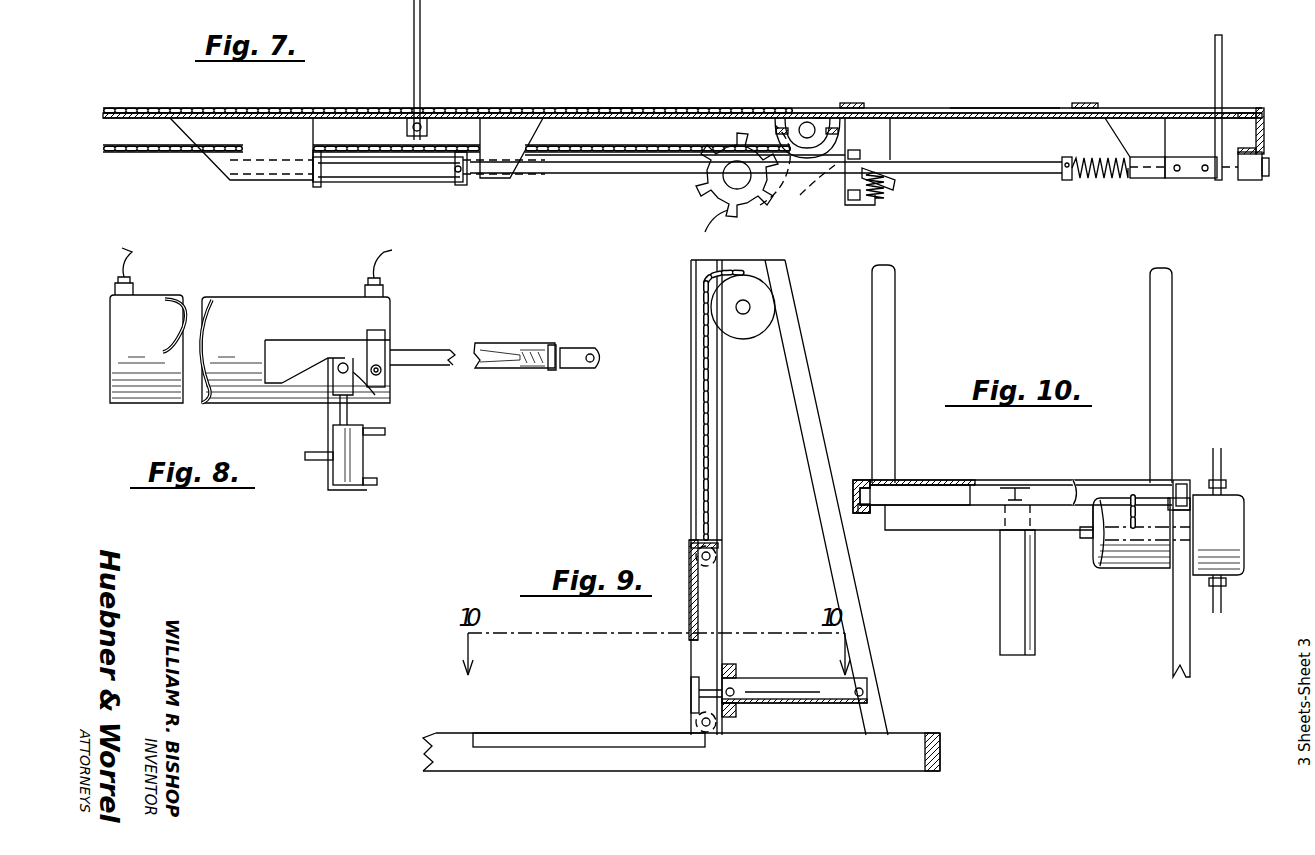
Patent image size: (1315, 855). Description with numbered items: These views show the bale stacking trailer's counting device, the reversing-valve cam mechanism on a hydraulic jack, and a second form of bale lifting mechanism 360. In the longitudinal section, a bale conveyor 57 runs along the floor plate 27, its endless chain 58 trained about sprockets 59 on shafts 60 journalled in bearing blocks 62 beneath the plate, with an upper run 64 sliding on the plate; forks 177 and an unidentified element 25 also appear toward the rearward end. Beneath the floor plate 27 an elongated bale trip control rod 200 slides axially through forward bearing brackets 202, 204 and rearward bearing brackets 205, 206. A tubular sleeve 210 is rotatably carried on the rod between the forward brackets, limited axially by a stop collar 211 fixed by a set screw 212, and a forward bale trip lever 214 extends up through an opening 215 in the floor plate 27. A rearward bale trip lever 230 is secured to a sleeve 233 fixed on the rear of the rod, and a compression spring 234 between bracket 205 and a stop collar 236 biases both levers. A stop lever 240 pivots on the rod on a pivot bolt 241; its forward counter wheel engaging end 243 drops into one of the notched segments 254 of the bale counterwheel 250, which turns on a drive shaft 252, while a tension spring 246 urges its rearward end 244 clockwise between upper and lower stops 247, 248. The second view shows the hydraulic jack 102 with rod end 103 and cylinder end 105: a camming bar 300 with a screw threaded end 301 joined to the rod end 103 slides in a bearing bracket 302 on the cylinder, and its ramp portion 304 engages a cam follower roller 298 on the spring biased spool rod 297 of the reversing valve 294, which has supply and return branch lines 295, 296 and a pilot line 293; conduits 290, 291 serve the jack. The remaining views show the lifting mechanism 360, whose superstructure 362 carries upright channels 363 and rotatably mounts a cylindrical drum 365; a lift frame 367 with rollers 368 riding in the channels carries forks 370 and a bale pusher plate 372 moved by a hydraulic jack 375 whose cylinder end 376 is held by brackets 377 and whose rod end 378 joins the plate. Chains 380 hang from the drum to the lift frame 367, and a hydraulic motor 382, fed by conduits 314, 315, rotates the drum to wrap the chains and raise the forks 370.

In FIG. 7, the end bracket 25 is at (1265, 142).
In FIG. 7, the floor plate 27 is at (985, 108).
In FIG. 7, the bale conveyor 57 is at (372, 106).
In FIG. 7, the endless chain 58 is at (313, 108).
In FIG. 7, the sprockets 59 is at (793, 117).
In FIG. 7, the shafts 60 is at (809, 122).
In FIG. 7, the bearing blocks 62 is at (830, 120).
In FIG. 7, the upper run 64 is at (624, 108).
In FIG. 7, the forks 177 is at (864, 104).
In FIG. 7, the bale trip control rod 200 is at (987, 166).
In FIG. 7, the forward bearing bracket 202 is at (243, 181).
In FIG. 7, the forward bearing bracket 204 is at (508, 180).
In FIG. 7, the rearward bearing bracket 205 is at (1150, 180).
In FIG. 7, the rearward bearing bracket 206 is at (1246, 182).
In FIG. 7, the tubular sleeve 210 is at (360, 183).
In FIG. 7, the stop collar 211 is at (456, 183).
In FIG. 7, the set screw 212 is at (466, 186).
In FIG. 7, the forward bale trip lever 214 is at (421, 30).
In FIG. 7, the opening 215 is at (428, 118).
In FIG. 7, the rearward bale trip lever 230 is at (1223, 70).
In FIG. 7, the sleeve 233 is at (1193, 180).
In FIG. 7, the compression spring 234 is at (1092, 180).
In FIG. 7, the stop collar 236 is at (1062, 178).
In FIG. 7, the stop lever 240 is at (1005, 159).
In FIG. 7, the pivot bolt 241 is at (825, 180).
In FIG. 7, the counter wheel engaging end 243 is at (776, 198).
In FIG. 7, the rearward end 244 is at (895, 172).
In FIG. 7, the tension spring 246 is at (886, 192).
In FIG. 7, the upper stop 247 is at (882, 158).
In FIG. 7, the lower stop 248 is at (856, 204).
In FIG. 7, the bale counterwheel 250 is at (712, 205).
In FIG. 7, the drive shaft 252 is at (722, 180).
In FIG. 7, the notched segments 254 is at (712, 228).
In FIG. 8, the hydraulic jack 102 is at (245, 300).
In FIG. 8, the rod end 103 is at (582, 372).
In FIG. 8, the cylinder end 105 is at (141, 322).
In FIG. 8, the conduit 290 is at (374, 274).
In FIG. 8, the conduit 291 is at (134, 262).
In FIG. 8, the pilot line 293 is at (312, 458).
In FIG. 8, the reversing valve 294 is at (366, 455).
In FIG. 8, the supply branch line 295 is at (378, 484).
In FIG. 8, the return branch line 296 is at (385, 432).
In FIG. 8, the spool rod 297 is at (338, 402).
In FIG. 8, the cam follower roller 298 is at (358, 392).
In FIG. 8, the camming bar 300 is at (347, 348).
In FIG. 8, the screw threaded end 301 is at (520, 345).
In FIG. 8, the bearing bracket 302 is at (388, 332).
In FIG. 8, the ramp portion 304 is at (300, 372).
In FIG. 9, the bale lifting mechanism 360 is at (688, 462).
In FIG. 9, the superstructure 362 is at (805, 372).
In FIG. 9, the upright channels 363 is at (723, 438).
In FIG. 10, the upright channels 363 is at (854, 478).
In FIG. 9, the cylindrical drum 365 is at (748, 340).
In FIG. 10, the cylindrical drum 365 is at (1122, 560).
In FIG. 9, the lift frame 367 is at (712, 600).
In FIG. 10, the lift frame 367 is at (895, 490).
In FIG. 9, the rollers 368 is at (718, 556).
In FIG. 10, the rollers 368 is at (865, 514).
In FIG. 9, the forks 370 is at (558, 733).
In FIG. 10, the forks 370 is at (896, 328).
In FIG. 9, the bale pusher plate 372 is at (690, 686).
In FIG. 10, the bale pusher plate 372 is at (1048, 480).
In FIG. 9, the hydraulic jack 375 is at (782, 690).
In FIG. 10, the hydraulic jack 375 is at (1030, 586).
In FIG. 9, the cylinder end 376 is at (848, 705).
In FIG. 10, the cylinder end 376 is at (1036, 646).
In FIG. 9, the brackets 377 is at (730, 676).
In FIG. 10, the brackets 377 is at (937, 515).
In FIG. 10, the rod end 378 is at (1010, 501).
In FIG. 9, the chains 380 is at (700, 398).
In FIG. 10, the chains 380 is at (1133, 497).
In FIG. 10, the hydraulic motor 382 is at (1246, 508).
In FIG. 10, the conduit 314 is at (1223, 478).
In FIG. 10, the conduit 315 is at (1223, 600).